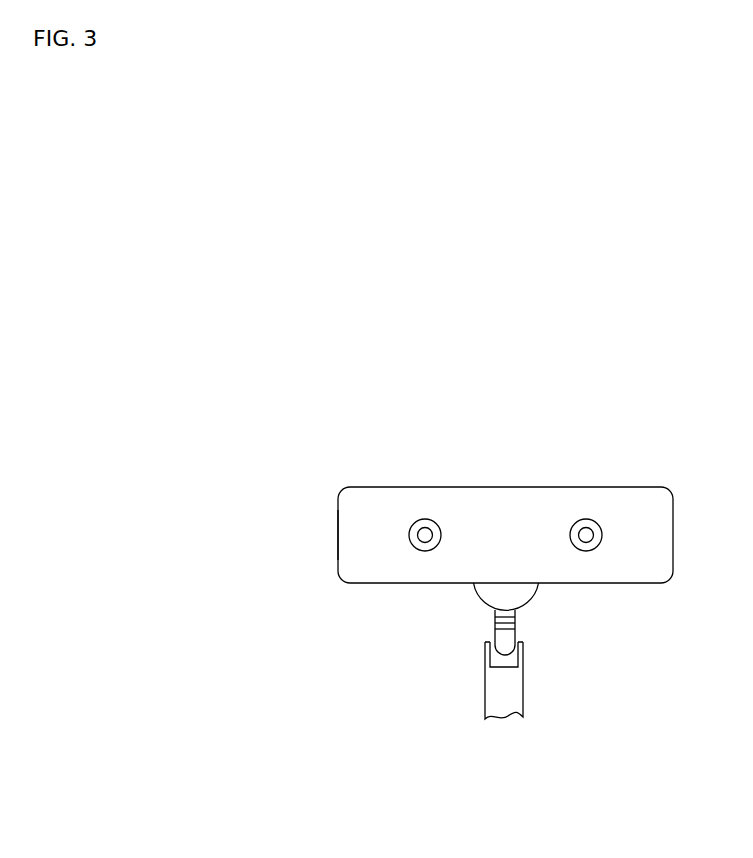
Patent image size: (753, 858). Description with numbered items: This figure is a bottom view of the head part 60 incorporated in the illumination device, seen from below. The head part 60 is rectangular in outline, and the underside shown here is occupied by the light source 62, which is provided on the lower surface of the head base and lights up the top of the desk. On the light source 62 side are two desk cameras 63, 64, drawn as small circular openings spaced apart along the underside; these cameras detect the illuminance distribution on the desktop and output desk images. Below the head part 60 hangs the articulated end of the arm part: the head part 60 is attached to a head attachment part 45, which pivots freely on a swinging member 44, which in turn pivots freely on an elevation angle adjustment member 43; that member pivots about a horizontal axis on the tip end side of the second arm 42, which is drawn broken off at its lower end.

The head part 60 is at (348, 487).
The light source 62 is at (346, 540).
The desk camera 63 is at (425, 519).
The desk camera 64 is at (586, 519).
The head attachment part 45 is at (528, 596).
The swinging member 44 is at (494, 641).
The elevation angle adjustment member 43 is at (517, 656).
The second arm 42 is at (513, 695).